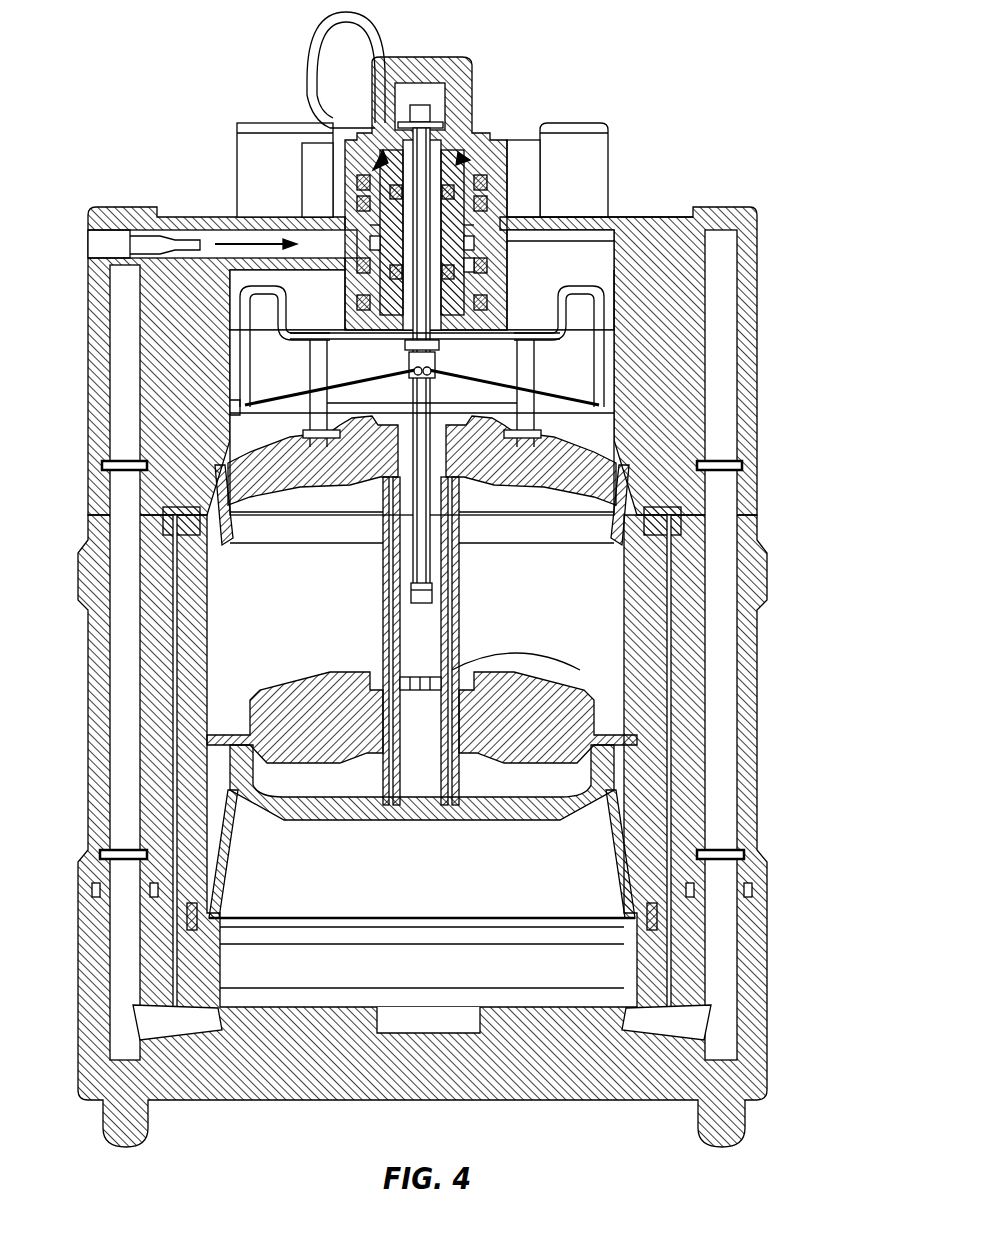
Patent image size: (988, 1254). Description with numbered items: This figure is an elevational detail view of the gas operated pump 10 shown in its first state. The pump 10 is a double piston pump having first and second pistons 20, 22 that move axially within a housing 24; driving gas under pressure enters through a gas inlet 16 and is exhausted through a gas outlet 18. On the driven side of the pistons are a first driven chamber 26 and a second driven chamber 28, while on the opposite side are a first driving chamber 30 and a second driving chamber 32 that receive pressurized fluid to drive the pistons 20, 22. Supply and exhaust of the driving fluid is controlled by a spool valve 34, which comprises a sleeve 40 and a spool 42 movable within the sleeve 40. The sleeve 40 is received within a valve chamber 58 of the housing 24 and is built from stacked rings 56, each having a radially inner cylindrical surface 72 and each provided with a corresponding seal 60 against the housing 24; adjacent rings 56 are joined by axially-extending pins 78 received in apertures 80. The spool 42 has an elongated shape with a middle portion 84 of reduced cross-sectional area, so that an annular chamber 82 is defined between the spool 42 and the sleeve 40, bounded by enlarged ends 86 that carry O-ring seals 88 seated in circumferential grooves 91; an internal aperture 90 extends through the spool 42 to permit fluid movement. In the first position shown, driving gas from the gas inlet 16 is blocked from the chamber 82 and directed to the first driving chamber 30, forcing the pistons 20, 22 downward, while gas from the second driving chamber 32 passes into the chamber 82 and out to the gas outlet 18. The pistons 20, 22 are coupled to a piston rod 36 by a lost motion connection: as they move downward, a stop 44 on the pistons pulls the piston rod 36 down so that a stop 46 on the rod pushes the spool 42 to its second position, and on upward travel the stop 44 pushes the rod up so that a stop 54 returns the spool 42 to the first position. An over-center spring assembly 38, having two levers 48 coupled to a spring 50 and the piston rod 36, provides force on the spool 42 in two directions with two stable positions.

The pump 10 is at (726, 68).
The gas inlet 16 is at (328, 128).
The gas outlet 18 is at (513, 132).
The first piston 20 is at (600, 490).
The second piston 22 is at (538, 810).
The housing 24 is at (715, 612).
The first driven chamber 26 is at (242, 600).
The second driven chamber 28 is at (220, 765).
The first driving chamber 30 is at (237, 390).
The second driving chamber 32 is at (424, 904).
The spool valve 34 is at (478, 165).
The piston rod 36 is at (427, 566).
The spring assembly 38 is at (600, 272).
The sleeve 40 is at (330, 152).
The spool 42 is at (400, 160).
The stop 44 is at (440, 428).
The stop 46 is at (440, 110).
The levers 48 is at (562, 392).
The spring 50 is at (240, 325).
The stop 54 is at (300, 368).
The ring 56 is at (490, 225).
The valve chamber 58 is at (488, 243).
The seal 60 is at (548, 333).
The radially inner cylindrical surface 72 is at (600, 215).
The pin 78 is at (350, 235).
The aperture 80 is at (362, 210).
The chamber 82 is at (338, 250).
The middle portion 84 is at (355, 250).
The enlarged end 86 is at (512, 168).
The seal 88 is at (512, 205).
The internal aperture 90 is at (474, 265).
The circumferential groove 91 is at (372, 228).